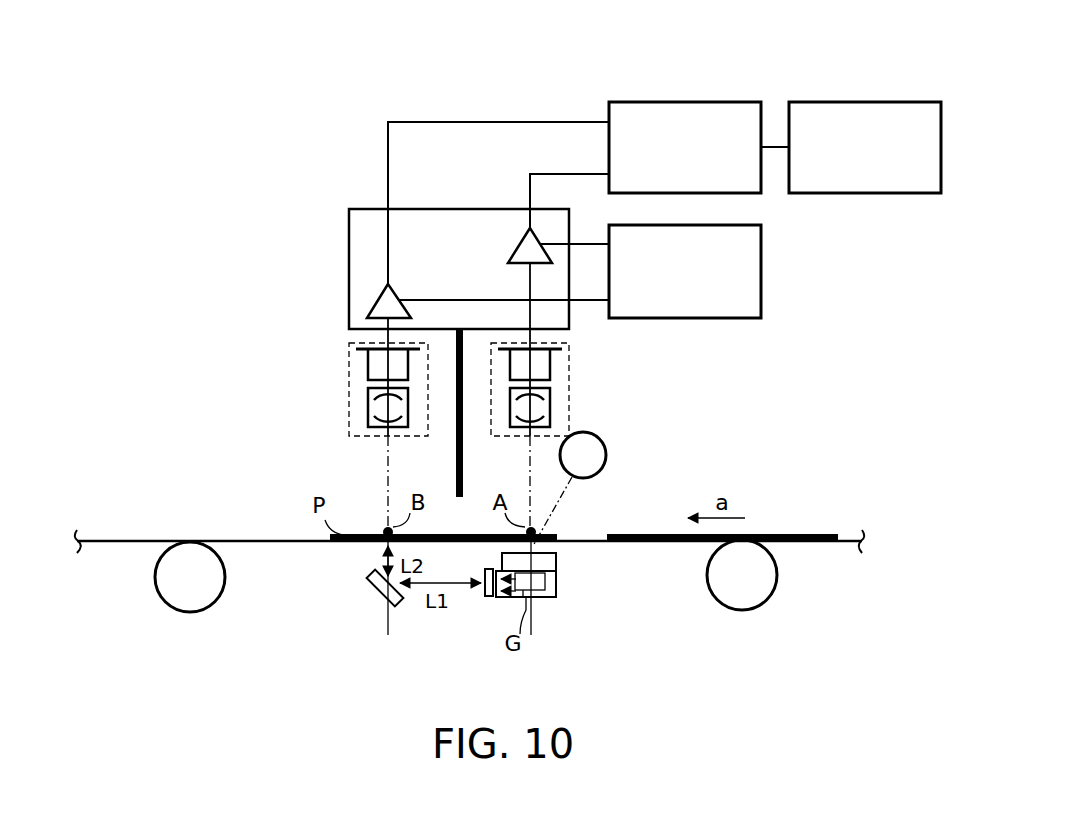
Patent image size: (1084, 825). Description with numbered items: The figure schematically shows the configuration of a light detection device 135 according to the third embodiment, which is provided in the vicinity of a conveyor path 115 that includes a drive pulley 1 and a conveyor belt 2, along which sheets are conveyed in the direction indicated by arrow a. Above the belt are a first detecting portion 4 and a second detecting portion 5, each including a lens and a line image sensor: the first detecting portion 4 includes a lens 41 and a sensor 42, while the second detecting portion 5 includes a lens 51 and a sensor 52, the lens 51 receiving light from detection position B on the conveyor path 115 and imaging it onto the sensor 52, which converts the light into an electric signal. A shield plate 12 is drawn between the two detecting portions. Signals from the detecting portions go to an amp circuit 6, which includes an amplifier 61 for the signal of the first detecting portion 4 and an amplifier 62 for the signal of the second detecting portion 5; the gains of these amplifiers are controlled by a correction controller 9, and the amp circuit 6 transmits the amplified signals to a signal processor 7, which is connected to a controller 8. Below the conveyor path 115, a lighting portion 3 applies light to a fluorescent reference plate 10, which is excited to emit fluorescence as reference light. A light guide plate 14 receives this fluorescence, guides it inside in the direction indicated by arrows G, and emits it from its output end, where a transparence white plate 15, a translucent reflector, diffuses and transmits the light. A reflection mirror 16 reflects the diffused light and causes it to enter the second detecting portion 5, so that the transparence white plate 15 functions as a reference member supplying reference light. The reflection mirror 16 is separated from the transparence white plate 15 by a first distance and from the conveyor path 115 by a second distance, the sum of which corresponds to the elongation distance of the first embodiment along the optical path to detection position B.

The light detection device 135 is at (520, 74).
The signal processor 7 is at (704, 101).
The controller 8 is at (887, 101).
The correction controller 9 is at (763, 272).
The amp circuit 6 is at (457, 225).
The amplifier 61 is at (522, 240).
The amplifier 62 is at (392, 287).
The second detecting portion 5 is at (358, 386).
The sensor 52 is at (368, 364).
The lens 51 is at (368, 407).
The first detecting portion 4 is at (560, 386).
The sensor 42 is at (550, 364).
The lens 41 is at (550, 407).
The shield plate 12 is at (456, 463).
The lighting portion 3 is at (607, 455).
The conveyor belt 2 is at (240, 540).
The drive pulley 1 is at (160, 595).
The conveyor path 115 is at (285, 546).
The reflection mirror 16 is at (372, 590).
The transparence white plate 15 is at (489, 598).
The light guide plate 14 is at (557, 588).
The fluorescent reference plate 10 is at (557, 560).